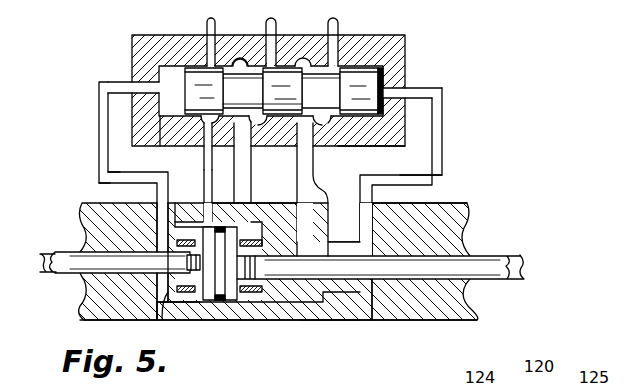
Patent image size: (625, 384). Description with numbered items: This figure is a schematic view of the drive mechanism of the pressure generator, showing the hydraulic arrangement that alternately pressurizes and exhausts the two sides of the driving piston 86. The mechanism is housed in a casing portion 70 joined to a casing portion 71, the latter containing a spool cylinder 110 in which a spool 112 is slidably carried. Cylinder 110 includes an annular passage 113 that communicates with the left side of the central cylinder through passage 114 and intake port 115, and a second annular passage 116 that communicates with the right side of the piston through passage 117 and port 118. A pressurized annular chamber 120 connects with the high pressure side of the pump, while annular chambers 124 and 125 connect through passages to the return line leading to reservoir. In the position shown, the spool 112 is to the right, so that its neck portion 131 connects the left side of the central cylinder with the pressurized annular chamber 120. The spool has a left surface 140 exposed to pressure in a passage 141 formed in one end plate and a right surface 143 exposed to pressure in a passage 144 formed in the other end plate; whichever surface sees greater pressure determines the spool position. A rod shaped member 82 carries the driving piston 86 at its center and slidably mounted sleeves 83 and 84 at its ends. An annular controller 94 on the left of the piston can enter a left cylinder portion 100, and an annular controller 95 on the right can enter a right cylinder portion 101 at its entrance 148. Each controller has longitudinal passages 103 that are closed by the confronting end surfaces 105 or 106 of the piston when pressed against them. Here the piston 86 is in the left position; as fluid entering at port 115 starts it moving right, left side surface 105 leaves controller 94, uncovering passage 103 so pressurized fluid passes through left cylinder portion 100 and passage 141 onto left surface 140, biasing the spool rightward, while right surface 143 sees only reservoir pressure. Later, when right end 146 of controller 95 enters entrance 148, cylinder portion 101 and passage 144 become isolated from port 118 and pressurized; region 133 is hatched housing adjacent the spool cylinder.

The casing portion 71 is at (132, 45).
The spool 112 is at (388, 79).
The annular chamber 124 is at (205, 24).
The annular passage 113 is at (250, 58).
The annular chamber 120 is at (272, 23).
The annular chamber 125 is at (340, 30).
The left surface 140 is at (150, 72).
The passage 141 is at (100, 145).
The right surface 143 is at (408, 90).
The passage 144 is at (447, 130).
The port 118 is at (400, 200).
The neck portion 131 is at (204, 152).
The passage 114 is at (214, 176).
The annular passage 116 is at (260, 162).
The passage 117 is at (318, 172).
The housing portion 133 is at (348, 130).
The cylinder 110 is at (158, 146).
The intake port 115 is at (99, 183).
The rod shaped member 82 is at (68, 252).
The sleeve 84 is at (470, 256).
The casing portion 70 is at (247, 313).
The entrance 148 is at (323, 241).
The right surface 106 is at (255, 218).
The driving piston 86 is at (192, 218).
The annular controller 94 is at (175, 204).
The annular controller 95 is at (300, 305).
The right cylinder portion 101 is at (345, 285).
The longitudinal passage 103 is at (266, 286).
The left side surface 105 is at (242, 322).
The right end 146 is at (324, 322).
The left cylinder portion 100 is at (153, 318).
The sleeve 83 is at (72, 274).